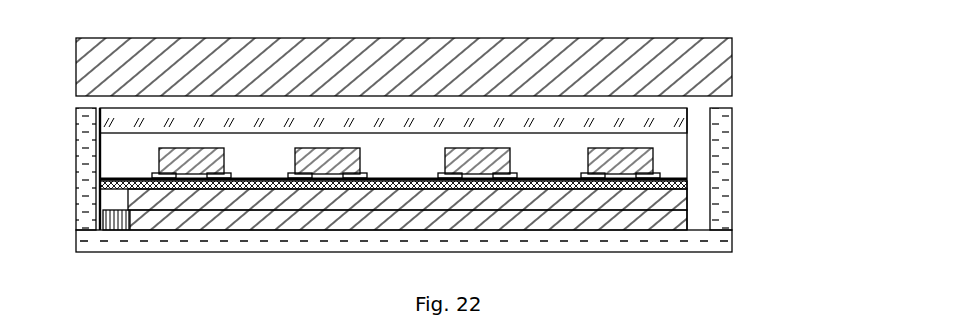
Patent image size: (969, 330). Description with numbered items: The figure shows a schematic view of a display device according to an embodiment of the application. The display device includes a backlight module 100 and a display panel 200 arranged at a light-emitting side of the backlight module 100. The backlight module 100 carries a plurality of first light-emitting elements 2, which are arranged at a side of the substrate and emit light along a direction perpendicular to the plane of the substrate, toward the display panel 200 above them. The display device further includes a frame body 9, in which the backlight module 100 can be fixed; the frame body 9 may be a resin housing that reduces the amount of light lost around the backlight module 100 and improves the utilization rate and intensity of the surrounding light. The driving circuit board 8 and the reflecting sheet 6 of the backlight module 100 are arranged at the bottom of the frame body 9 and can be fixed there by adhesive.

The display panel 200 is at (732, 68).
The first light-emitting element 2 is at (159, 148).
The frame body 9 is at (84, 153).
The driving circuit board 8 is at (110, 224).
The backlight module 100 is at (662, 178).
The reflecting sheet 6 is at (685, 220).